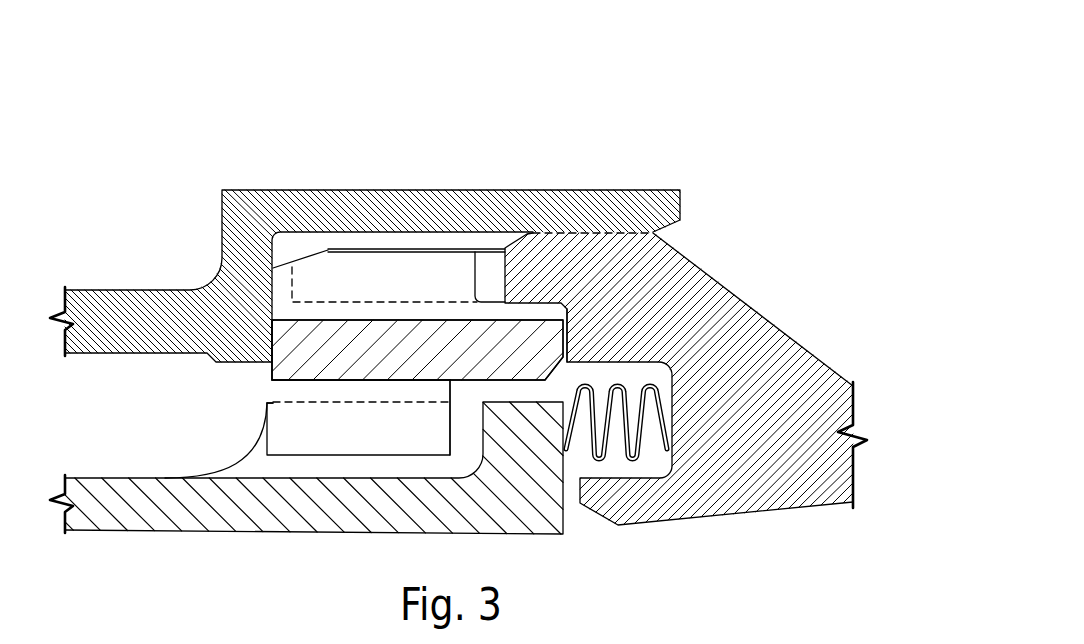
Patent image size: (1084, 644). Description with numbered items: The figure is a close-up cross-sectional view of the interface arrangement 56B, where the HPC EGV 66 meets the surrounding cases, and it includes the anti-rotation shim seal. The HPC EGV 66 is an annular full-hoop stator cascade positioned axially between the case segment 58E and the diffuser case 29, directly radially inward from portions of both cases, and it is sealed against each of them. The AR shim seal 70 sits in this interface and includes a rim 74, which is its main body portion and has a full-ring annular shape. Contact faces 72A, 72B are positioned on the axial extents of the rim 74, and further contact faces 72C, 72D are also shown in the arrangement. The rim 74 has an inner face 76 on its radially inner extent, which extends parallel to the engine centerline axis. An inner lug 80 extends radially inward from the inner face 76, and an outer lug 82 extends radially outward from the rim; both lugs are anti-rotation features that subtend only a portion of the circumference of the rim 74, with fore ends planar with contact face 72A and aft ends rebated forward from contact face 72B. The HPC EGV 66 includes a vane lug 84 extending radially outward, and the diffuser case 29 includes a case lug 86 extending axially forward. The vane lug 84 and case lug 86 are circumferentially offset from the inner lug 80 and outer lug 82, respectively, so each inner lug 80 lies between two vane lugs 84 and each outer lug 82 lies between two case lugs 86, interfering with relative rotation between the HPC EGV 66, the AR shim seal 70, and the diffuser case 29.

The interface arrangement 56B is at (642, 86).
The case segment 58E is at (322, 190).
The case lug 86 is at (487, 249).
The outer lug 82 is at (298, 264).
The contact face 72B is at (568, 327).
The diffuser case 29 is at (800, 355).
The contact face 72C is at (273, 344).
The contact face 72D is at (566, 337).
The contact face 72A is at (272, 370).
The AR shim seal 70 is at (262, 394).
The inner lug 80 is at (270, 437).
The rim 74 is at (292, 365).
The inner face 76 is at (380, 380).
The vane lug 84 is at (253, 457).
The HPC EGV 66 is at (532, 537).